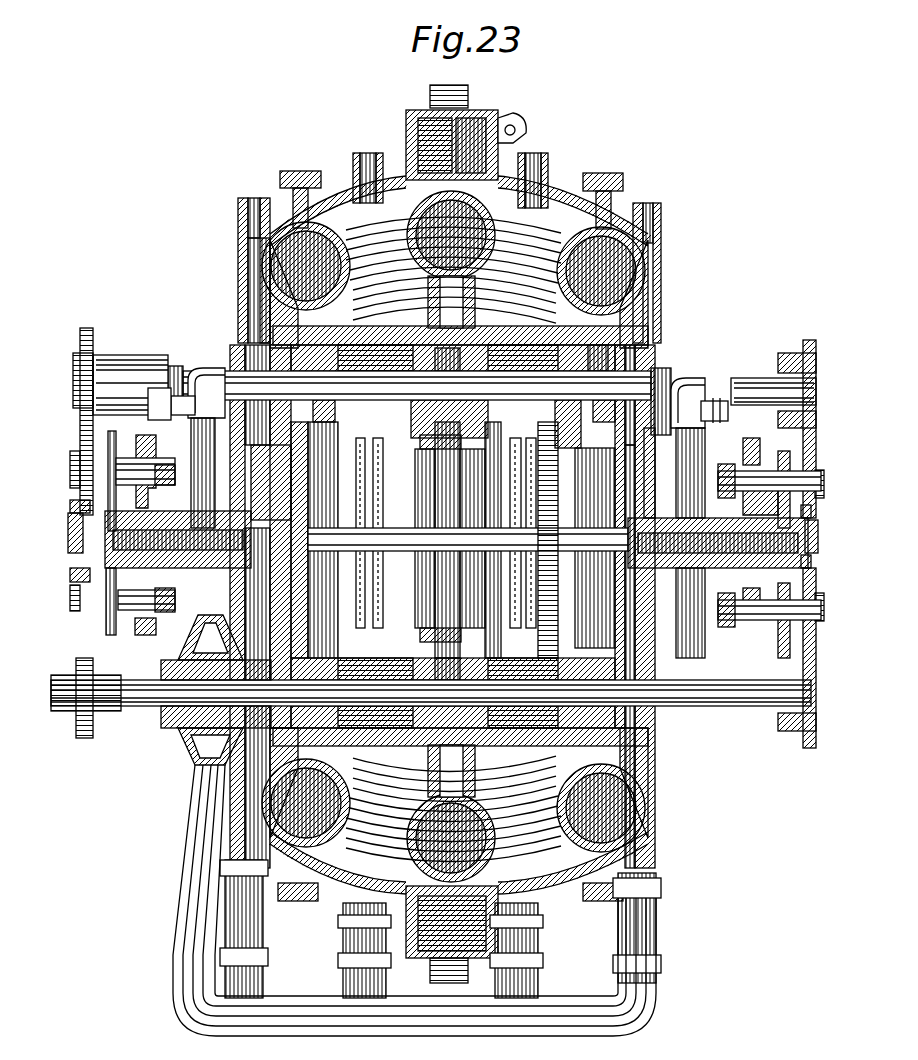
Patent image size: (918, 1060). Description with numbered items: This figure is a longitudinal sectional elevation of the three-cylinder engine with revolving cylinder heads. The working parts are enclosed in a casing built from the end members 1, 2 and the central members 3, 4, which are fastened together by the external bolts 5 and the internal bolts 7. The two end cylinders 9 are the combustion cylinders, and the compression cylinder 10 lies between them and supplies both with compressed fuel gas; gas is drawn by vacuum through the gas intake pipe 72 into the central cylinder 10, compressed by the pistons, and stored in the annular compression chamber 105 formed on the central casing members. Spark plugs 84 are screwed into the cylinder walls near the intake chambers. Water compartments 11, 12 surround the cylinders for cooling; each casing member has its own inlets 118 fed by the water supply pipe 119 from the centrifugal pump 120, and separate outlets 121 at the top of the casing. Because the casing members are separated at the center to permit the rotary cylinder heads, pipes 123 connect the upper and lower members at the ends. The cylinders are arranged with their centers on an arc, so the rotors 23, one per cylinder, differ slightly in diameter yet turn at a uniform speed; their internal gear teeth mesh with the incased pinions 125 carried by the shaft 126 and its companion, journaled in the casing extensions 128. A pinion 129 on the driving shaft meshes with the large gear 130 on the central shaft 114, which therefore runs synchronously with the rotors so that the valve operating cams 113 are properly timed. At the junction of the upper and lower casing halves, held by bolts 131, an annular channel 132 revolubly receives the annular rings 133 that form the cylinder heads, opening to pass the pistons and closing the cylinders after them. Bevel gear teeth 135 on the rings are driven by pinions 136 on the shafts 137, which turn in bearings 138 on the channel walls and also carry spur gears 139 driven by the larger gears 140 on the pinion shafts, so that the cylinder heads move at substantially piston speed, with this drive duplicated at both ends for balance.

The end member 1 is at (262, 300).
The end member 2 is at (620, 196).
The central member 3 is at (345, 180).
The central member 4 is at (560, 175).
The external bolts 5 is at (460, 86).
The internal bolts 7 is at (412, 434).
The combustion cylinders 9 is at (453, 537).
The compression cylinder 10 is at (451, 536).
The water compartment 11 is at (240, 248).
The water compartment 12 is at (453, 539).
The rotors 23 is at (420, 303).
The gas intake pipe 72 is at (512, 110).
The spark plugs 84 is at (168, 406).
The annular compression chamber 105 is at (402, 104).
The valve operating cams 113 is at (372, 488).
The central shaft 114 is at (468, 540).
The water inlets 118 is at (320, 890).
The water supply pipe 119 is at (330, 988).
The centrifugal pump 120 is at (190, 718).
The water outlets 121 is at (237, 190).
The connecting pipes 123 is at (200, 405).
The pinions 125 is at (403, 408).
The shaft 126 is at (168, 350).
The casing extensions 128 is at (560, 723).
The pinion 129 is at (523, 716).
The large gear 130 is at (550, 590).
The bolts 131 is at (62, 545).
The annular channel 132 is at (195, 545).
The annular ring 133 is at (175, 505).
The bevel gear teeth 135 is at (68, 498).
The pinions 136 is at (142, 432).
The shafts 137 is at (220, 598).
The bearings 138 is at (104, 423).
The spur gears 139 is at (66, 443).
The large gears 140 is at (85, 330).